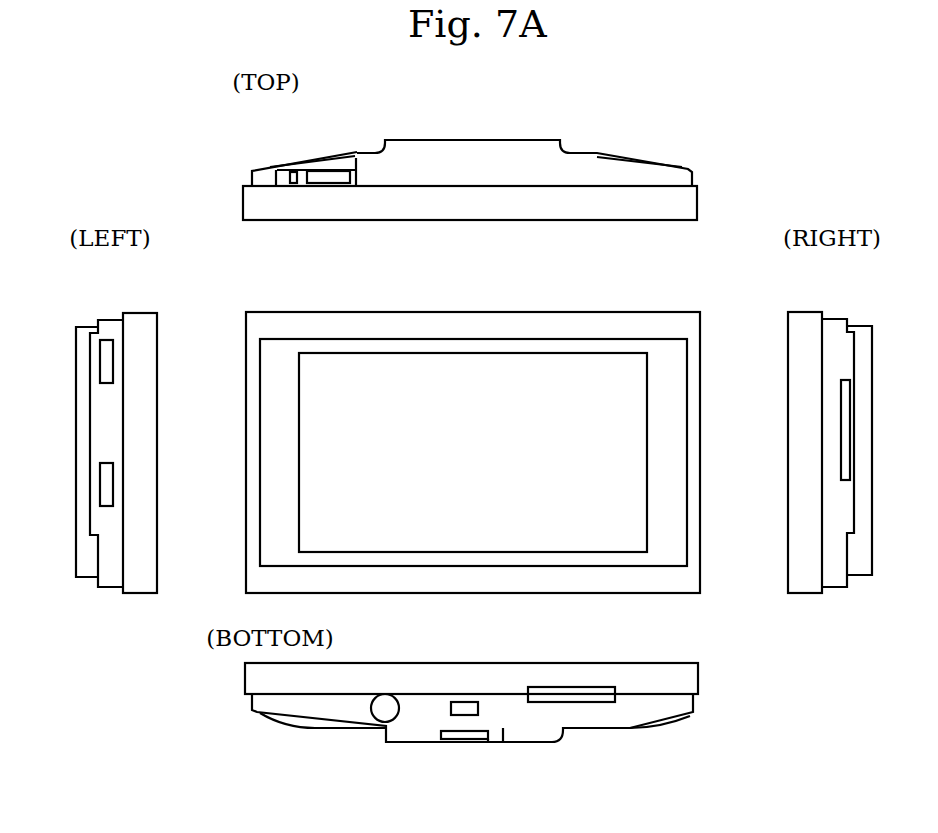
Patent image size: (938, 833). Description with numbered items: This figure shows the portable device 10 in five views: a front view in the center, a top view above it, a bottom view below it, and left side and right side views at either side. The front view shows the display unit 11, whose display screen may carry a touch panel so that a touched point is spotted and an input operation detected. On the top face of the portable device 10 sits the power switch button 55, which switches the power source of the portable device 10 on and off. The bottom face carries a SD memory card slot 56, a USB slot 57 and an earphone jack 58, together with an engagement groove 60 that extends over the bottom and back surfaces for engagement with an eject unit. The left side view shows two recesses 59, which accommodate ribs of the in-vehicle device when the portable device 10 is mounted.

The portable device 10 is at (688, 200).
The display unit 11 is at (610, 367).
The power switch button 55 is at (322, 175).
The SD memory card slot 56 is at (592, 697).
The USB slot 57 is at (478, 709).
The earphone jack 58 is at (380, 711).
The recesses 59 is at (108, 364).
The engagement groove 60 is at (472, 736).